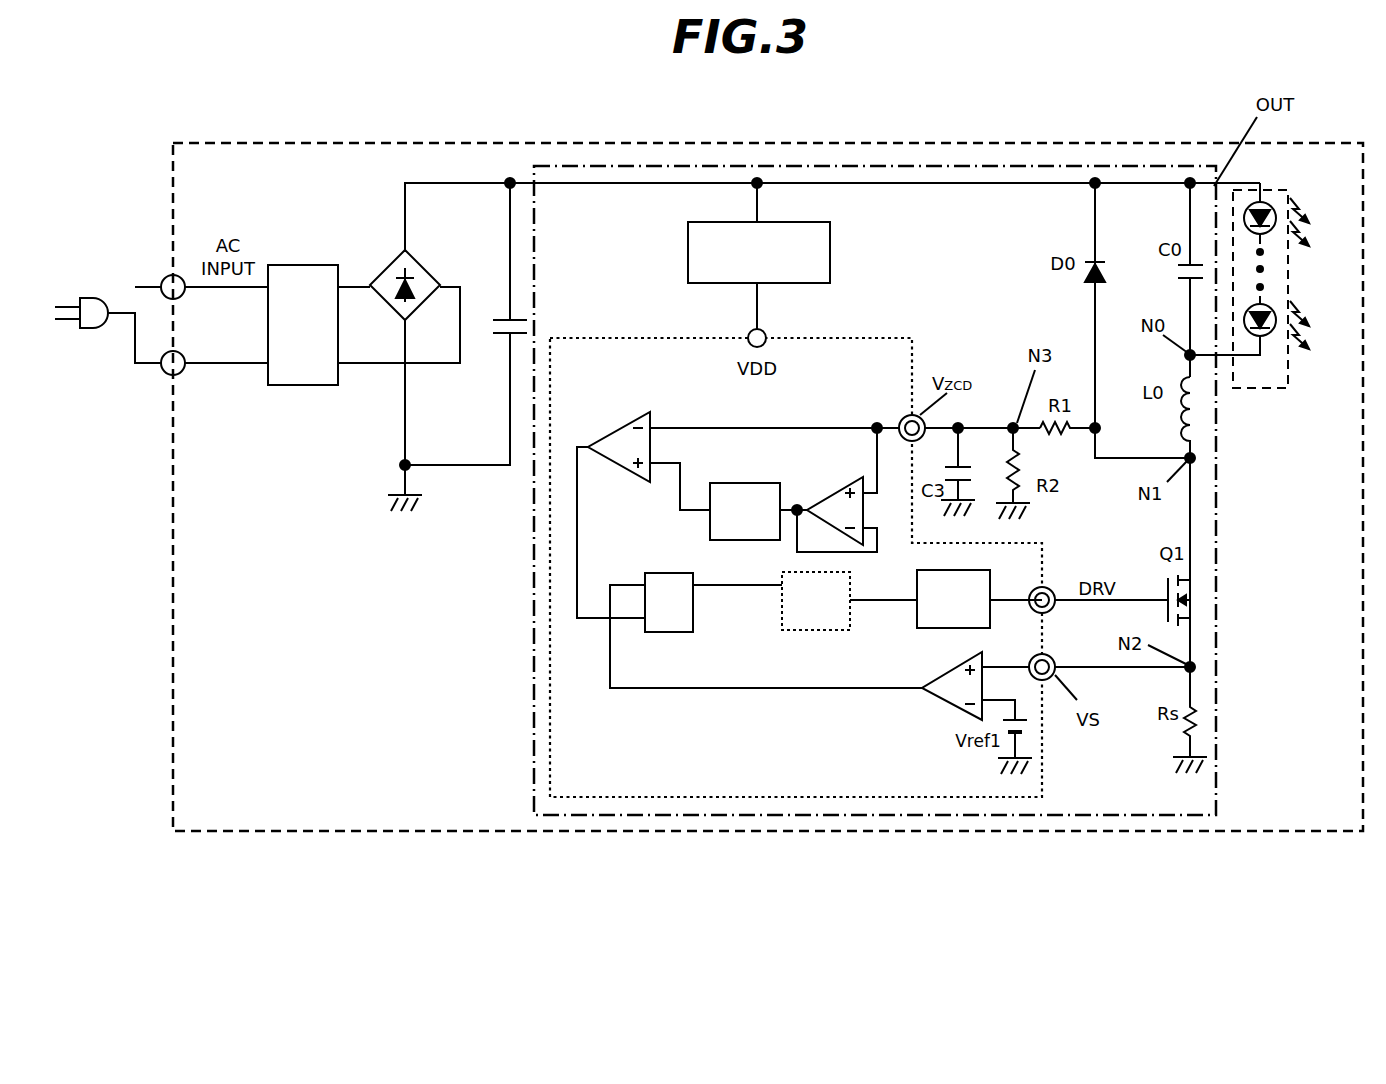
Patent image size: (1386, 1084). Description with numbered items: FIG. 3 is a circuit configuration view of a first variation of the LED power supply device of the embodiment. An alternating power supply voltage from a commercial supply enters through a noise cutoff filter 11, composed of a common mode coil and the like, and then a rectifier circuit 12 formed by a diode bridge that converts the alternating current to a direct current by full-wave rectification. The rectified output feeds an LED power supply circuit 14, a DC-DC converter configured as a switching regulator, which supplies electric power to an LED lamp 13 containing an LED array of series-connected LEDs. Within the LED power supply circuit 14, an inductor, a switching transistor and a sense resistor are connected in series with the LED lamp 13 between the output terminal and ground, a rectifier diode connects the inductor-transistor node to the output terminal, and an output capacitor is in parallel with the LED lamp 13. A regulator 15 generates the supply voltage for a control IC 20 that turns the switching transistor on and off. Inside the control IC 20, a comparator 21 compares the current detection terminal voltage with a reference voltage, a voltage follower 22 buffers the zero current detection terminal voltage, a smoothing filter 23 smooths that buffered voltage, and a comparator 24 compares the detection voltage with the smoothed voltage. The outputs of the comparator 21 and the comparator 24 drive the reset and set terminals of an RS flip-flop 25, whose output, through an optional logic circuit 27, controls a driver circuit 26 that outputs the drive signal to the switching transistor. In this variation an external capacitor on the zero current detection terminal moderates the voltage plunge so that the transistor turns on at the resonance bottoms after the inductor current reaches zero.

The noise cutoff filter 11 is at (303, 385).
The rectifier circuit 12 is at (427, 267).
The LED lamp 13 is at (1267, 388).
The LED power supply circuit 14 is at (533, 647).
The regulator 15 is at (832, 253).
The control IC 20 is at (875, 338).
The comparator 21 is at (943, 700).
The voltage follower 22 is at (828, 487).
The smoothing filter 23 is at (738, 483).
The comparator 24 is at (622, 428).
The RS flip-flop 25 is at (675, 632).
The driver circuit 26 is at (932, 628).
The logic circuit 27 is at (807, 630).